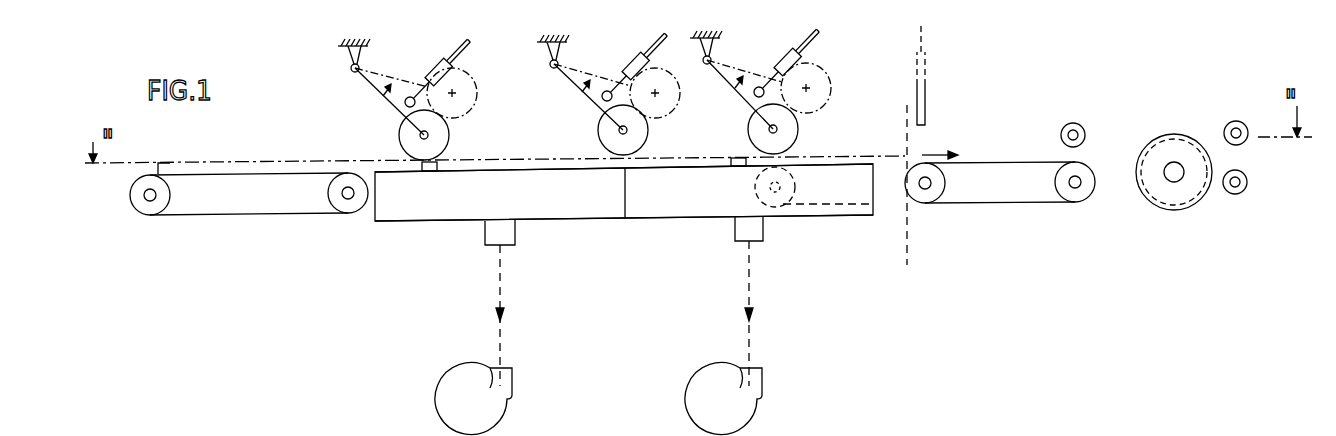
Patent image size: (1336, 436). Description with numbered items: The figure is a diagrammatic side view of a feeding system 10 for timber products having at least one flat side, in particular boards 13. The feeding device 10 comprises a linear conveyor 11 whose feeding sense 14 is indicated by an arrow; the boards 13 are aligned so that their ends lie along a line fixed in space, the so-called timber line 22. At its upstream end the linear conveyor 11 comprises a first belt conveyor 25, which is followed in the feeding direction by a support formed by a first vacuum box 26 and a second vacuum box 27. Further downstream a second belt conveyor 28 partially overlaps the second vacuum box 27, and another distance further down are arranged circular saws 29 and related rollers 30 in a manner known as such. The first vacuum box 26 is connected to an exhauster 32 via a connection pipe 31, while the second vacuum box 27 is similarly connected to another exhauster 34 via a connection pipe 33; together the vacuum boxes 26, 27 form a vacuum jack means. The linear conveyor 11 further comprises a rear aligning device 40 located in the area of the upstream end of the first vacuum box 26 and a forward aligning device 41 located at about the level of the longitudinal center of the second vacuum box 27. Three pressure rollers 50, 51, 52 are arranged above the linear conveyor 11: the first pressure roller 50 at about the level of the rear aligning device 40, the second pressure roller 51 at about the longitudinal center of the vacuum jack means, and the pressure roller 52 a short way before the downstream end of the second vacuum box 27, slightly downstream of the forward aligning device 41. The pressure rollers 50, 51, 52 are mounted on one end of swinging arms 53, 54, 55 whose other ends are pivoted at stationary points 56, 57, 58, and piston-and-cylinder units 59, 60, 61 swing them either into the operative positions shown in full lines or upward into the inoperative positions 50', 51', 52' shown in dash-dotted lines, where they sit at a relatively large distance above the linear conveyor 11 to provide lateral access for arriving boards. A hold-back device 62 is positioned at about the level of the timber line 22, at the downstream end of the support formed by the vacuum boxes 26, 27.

The feeding system 10 is at (966, 226).
The linear conveyor 11 is at (613, 226).
The boards 13 is at (848, 153).
The feeding sense of the linear conveyor 14 is at (928, 154).
The timber line 22 is at (910, 258).
The first belt conveyor 25 is at (228, 214).
The first vacuum box 26 is at (578, 212).
The second vacuum box 27 is at (702, 210).
The second belt conveyor 28 is at (897, 201).
The circular saws 29 is at (1172, 197).
The rollers 30 is at (1083, 130).
The connection pipe 31 is at (513, 238).
The exhauster 32 is at (505, 405).
The connection pipe 33 is at (765, 236).
The exhauster 34 is at (755, 404).
The rear aligning device 40 is at (440, 163).
The forward aligning device 41 is at (733, 158).
The first pressure roller 50 is at (391, 135).
The inoperative position of first pressure roller 50' is at (434, 93).
The second pressure roller 51 is at (594, 130).
The inoperative position of second pressure roller 51' is at (617, 103).
The pressure roller 52 is at (793, 129).
The inoperative position of pressure roller 52' is at (790, 86).
The swinging arm 53 is at (368, 85).
The swinging arm 54 is at (570, 82).
The swinging arm 55 is at (744, 82).
The stationary point 56 is at (350, 67).
The stationary point 57 is at (549, 64).
The stationary point 58 is at (703, 61).
The piston-and-cylinder unit 59 is at (432, 68).
The piston-and-cylinder unit 60 is at (628, 66).
The piston-and-cylinder unit 61 is at (800, 40).
The hold-back device 62 is at (929, 97).